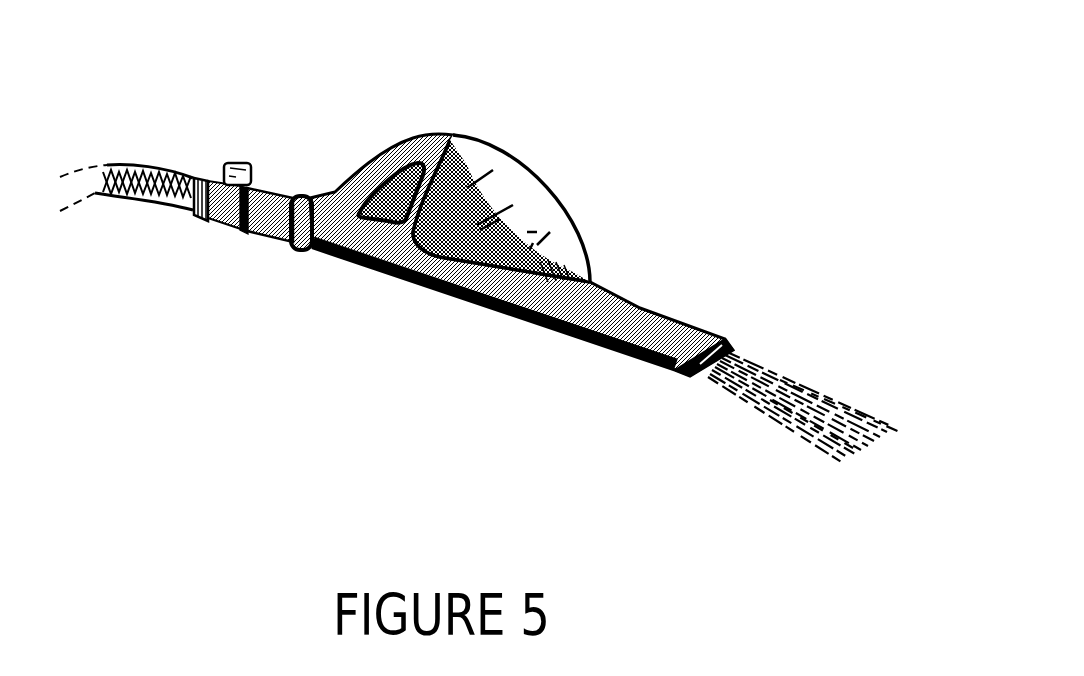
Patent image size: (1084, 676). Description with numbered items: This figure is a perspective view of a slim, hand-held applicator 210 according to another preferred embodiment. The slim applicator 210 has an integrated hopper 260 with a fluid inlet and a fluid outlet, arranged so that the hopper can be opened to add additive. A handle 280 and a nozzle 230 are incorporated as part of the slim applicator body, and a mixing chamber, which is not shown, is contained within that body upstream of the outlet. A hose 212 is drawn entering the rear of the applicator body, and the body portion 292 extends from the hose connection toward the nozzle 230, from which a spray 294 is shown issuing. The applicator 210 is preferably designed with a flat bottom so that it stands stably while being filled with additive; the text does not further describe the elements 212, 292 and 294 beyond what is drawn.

The slim applicator 210 is at (507, 265).
The hose 212 is at (162, 158).
The nozzle 230 is at (695, 372).
The integrated hopper 260 is at (525, 175).
The handle 280 is at (378, 160).
The nozzle body 292 is at (443, 300).
The spray stream 294 is at (817, 427).